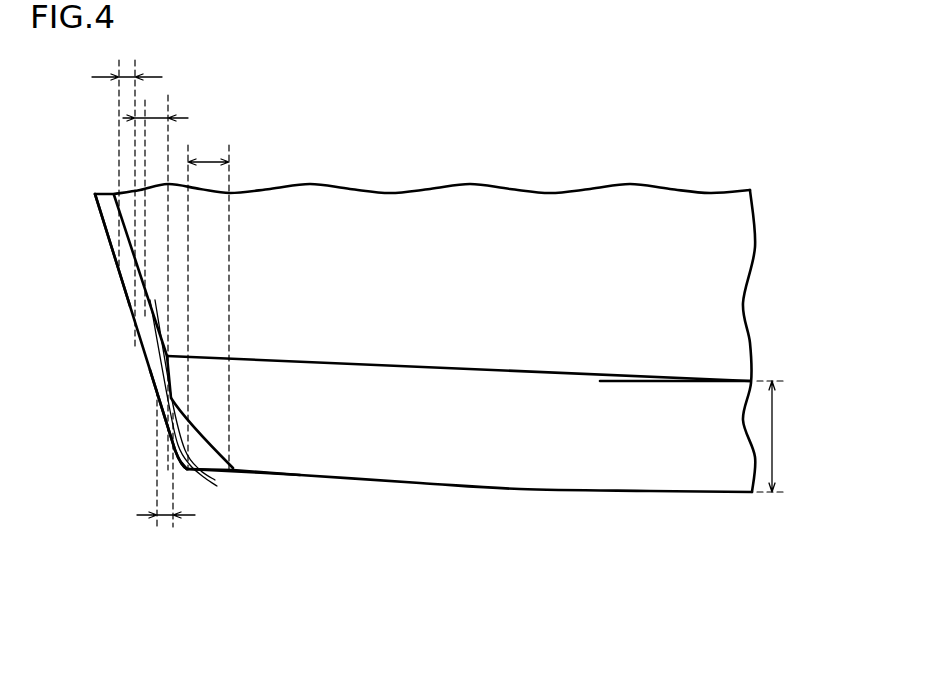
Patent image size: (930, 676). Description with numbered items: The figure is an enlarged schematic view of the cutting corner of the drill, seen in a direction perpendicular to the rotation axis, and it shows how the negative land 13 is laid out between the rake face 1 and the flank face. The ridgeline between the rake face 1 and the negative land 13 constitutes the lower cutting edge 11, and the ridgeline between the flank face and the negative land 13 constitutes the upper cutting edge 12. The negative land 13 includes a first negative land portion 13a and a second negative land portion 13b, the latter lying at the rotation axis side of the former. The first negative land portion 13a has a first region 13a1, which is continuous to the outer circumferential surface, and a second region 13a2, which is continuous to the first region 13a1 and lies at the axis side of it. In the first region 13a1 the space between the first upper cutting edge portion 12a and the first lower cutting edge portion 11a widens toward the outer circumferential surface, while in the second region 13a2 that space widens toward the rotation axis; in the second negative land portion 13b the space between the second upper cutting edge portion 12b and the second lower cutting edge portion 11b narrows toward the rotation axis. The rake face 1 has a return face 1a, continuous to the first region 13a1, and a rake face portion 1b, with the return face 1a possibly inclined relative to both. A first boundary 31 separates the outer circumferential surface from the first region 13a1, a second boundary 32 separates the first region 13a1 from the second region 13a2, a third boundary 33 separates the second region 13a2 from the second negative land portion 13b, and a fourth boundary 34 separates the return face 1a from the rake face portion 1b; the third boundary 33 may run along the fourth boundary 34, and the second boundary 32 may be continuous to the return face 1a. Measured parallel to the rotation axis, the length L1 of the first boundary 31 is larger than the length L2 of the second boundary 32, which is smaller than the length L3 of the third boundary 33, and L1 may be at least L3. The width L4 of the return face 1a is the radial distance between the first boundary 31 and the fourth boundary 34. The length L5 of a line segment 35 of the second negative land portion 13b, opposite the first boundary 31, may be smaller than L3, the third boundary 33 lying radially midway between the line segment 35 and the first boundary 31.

The rake face 1 is at (490, 552).
The return face 1a is at (400, 440).
The rake face portion 1b is at (318, 290).
The lower cutting edge 11 is at (407, 590).
The first lower cutting edge portion 11a is at (185, 431).
The second lower cutting edge portion 11b is at (156, 312).
The upper cutting edge 12 is at (147, 590).
The first upper cutting edge portion 12a is at (160, 412).
The second upper cutting edge portion 12b is at (132, 317).
The negative land 13 is at (272, 590).
The first negative land portion 13a is at (302, 552).
The first region 13a1 is at (194, 455).
The second region 13a2 is at (210, 462).
The second negative land portion 13b is at (185, 472).
The first boundary 31 is at (212, 472).
The second boundary 32 is at (163, 398).
The third boundary 33 is at (158, 357).
The fourth boundary 34 is at (480, 367).
The line segment 35 is at (129, 267).
The length of first boundary L1 is at (208, 162).
The length of second boundary L2 is at (165, 520).
The length of third boundary L3 is at (157, 118).
The width of return face L4 is at (776, 437).
The length of line segment L5 is at (126, 77).